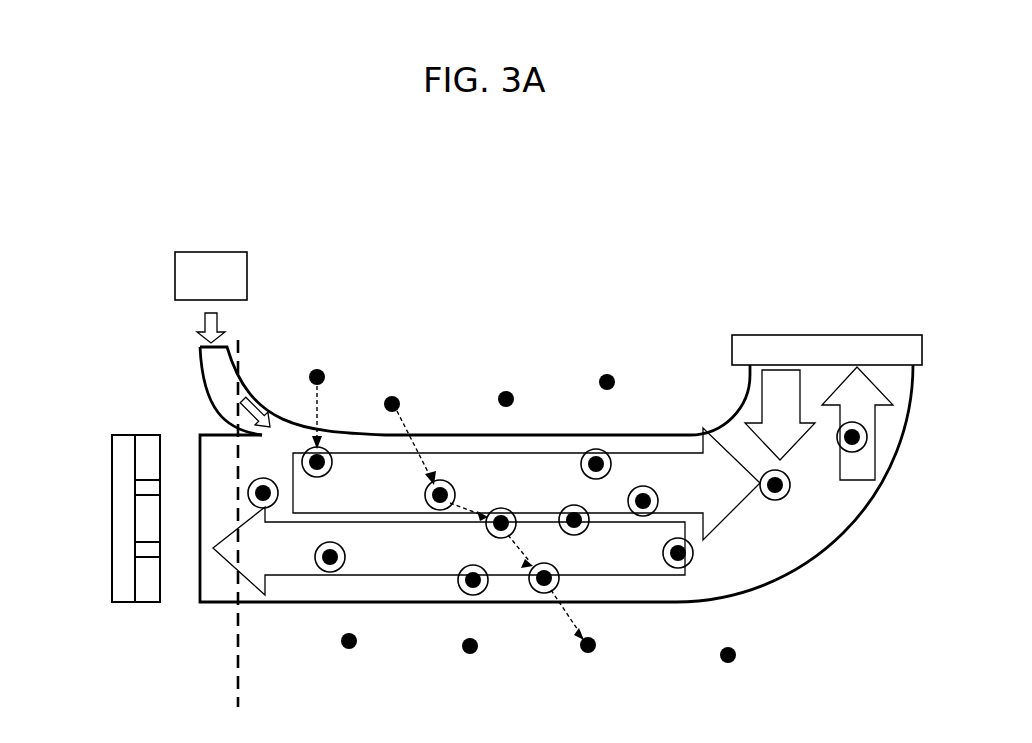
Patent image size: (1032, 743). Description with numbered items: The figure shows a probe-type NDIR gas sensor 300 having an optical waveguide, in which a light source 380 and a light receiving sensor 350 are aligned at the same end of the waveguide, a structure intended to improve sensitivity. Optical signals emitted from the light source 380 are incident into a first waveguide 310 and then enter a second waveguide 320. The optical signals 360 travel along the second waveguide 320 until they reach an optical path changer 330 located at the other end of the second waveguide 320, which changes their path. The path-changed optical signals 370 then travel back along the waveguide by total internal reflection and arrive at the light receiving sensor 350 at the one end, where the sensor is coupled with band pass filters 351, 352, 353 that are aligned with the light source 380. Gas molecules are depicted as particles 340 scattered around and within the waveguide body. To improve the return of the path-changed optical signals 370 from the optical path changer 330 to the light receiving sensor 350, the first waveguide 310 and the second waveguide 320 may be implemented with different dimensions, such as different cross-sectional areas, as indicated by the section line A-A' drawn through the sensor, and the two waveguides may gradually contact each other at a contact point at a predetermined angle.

The NDIR gas sensor 300 is at (484, 206).
The first waveguide 310 is at (206, 361).
The second waveguide 320 is at (611, 604).
The optical path changer 330 is at (826, 334).
The particles 340 is at (441, 478).
The light receiving sensor 350 is at (111, 584).
The band pass filter 351 is at (147, 434).
The band pass filter 352 is at (143, 510).
The band pass filter 353 is at (148, 604).
The optical signals 360 is at (641, 468).
The path-changed optical signals 370 is at (643, 565).
The light source 380 is at (210, 252).